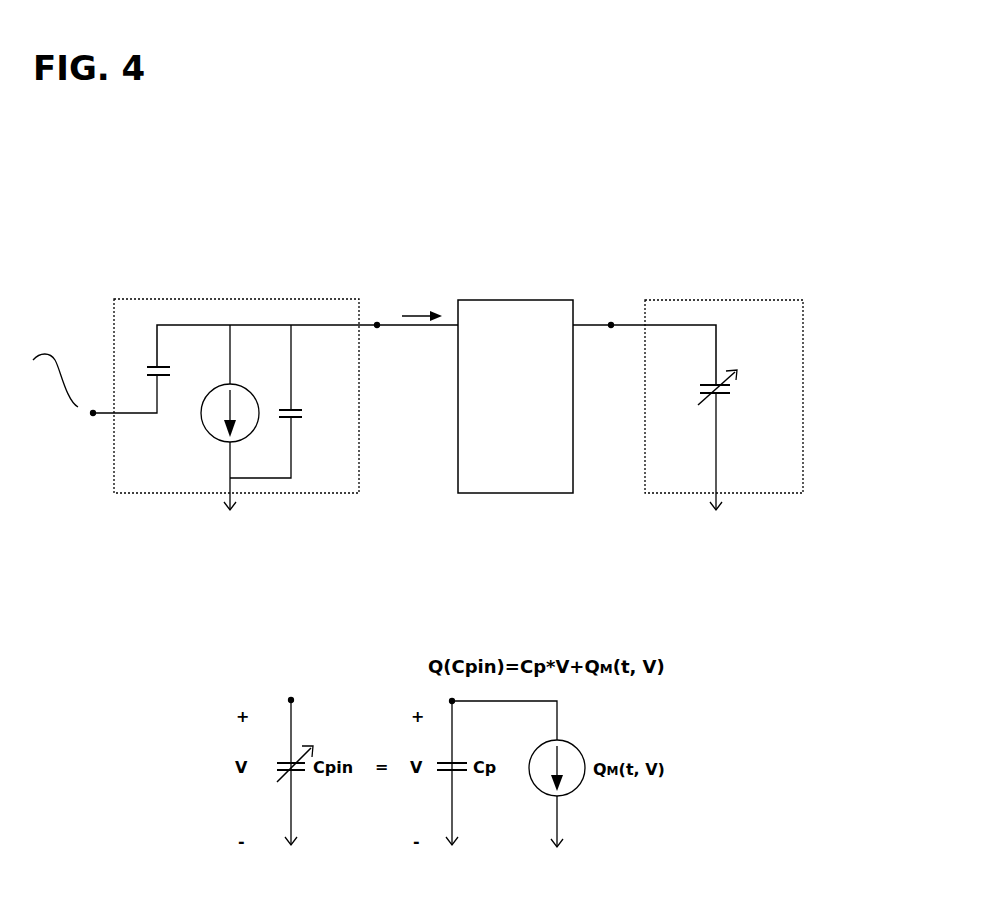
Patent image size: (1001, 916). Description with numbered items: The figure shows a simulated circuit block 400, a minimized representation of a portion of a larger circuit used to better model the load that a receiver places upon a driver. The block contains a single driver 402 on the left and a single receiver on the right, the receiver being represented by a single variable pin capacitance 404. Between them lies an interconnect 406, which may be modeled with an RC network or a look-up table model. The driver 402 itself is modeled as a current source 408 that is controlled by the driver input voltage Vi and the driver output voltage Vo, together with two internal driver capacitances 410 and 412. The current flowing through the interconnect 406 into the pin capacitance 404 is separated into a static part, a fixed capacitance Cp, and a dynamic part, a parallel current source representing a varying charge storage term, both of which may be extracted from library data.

The simulated circuit block 400 is at (574, 137).
The driver 402 is at (172, 299).
The variable pin capacitance 404 is at (707, 300).
The interconnect 406 is at (514, 300).
The current source 408 is at (202, 420).
The internal driver capacitance 410 is at (157, 367).
The internal driver capacitance 412 is at (291, 410).